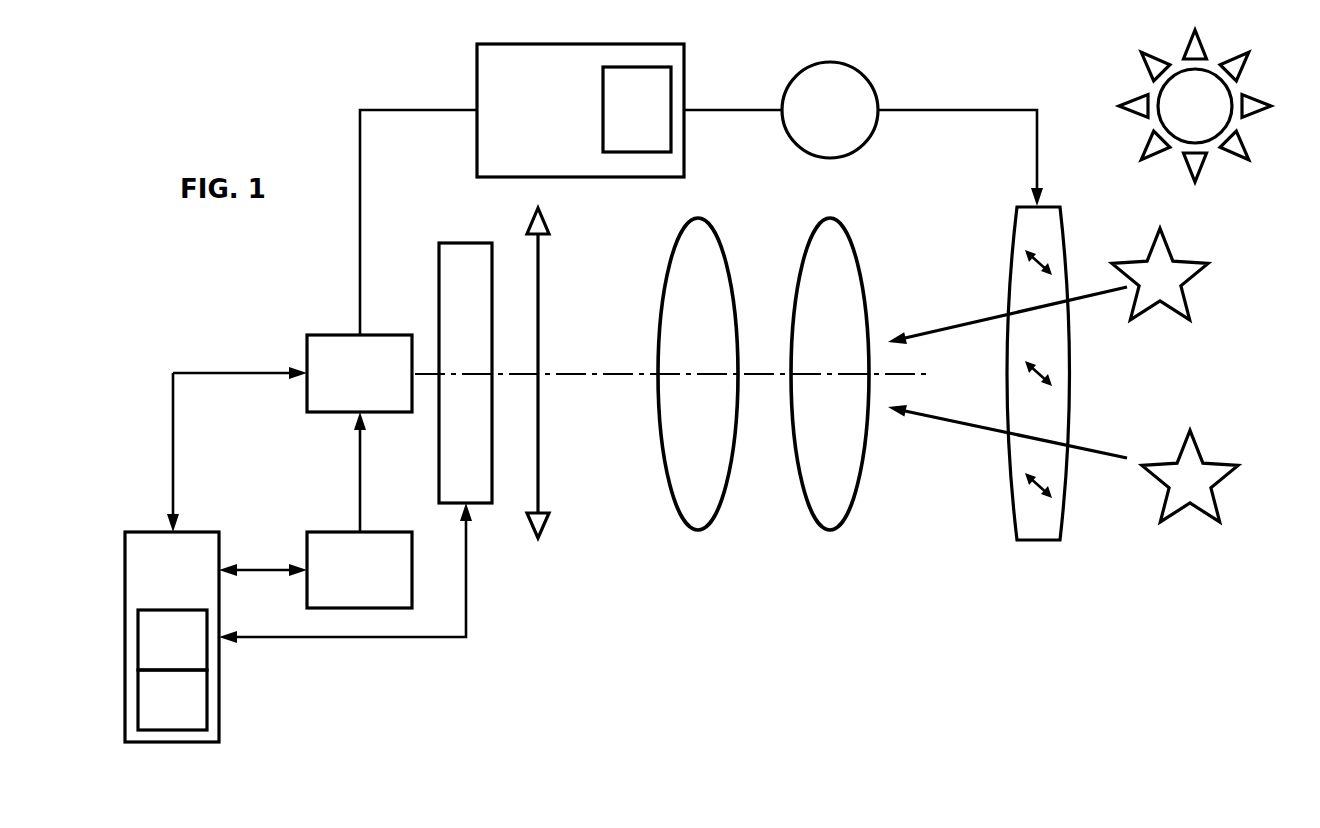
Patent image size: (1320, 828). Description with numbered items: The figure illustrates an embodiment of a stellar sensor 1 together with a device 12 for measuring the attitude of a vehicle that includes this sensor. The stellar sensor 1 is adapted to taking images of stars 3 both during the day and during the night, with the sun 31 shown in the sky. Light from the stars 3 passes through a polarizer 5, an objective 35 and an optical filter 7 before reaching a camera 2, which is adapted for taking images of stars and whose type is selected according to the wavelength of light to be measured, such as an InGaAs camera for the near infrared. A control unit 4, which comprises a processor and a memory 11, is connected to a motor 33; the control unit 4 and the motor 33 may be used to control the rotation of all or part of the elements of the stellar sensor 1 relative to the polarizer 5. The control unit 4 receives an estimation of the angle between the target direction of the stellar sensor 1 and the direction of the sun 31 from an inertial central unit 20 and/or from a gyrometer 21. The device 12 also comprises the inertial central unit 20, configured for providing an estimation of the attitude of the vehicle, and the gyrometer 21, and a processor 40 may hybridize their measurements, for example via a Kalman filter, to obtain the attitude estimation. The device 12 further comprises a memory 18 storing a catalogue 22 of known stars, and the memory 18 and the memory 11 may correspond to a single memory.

The stellar sensor 1 is at (794, 403).
The camera 2 is at (458, 361).
The stars 3 is at (1207, 297).
The control unit 4 is at (535, 124).
The polarizer 5 is at (822, 362).
The optical filter 7 is at (562, 444).
The memory 11 is at (624, 124).
The device for measuring the attitude of a vehicle 12 is at (525, 421).
The memory 18 is at (159, 654).
The inertial central unit 20 is at (347, 387).
The gyrometer 21 is at (347, 586).
The catalogue of known stars 22 is at (159, 714).
The sun 31 is at (1264, 137).
The motor 33 is at (817, 124).
The objective 35 is at (685, 362).
The processor 40 is at (159, 586).